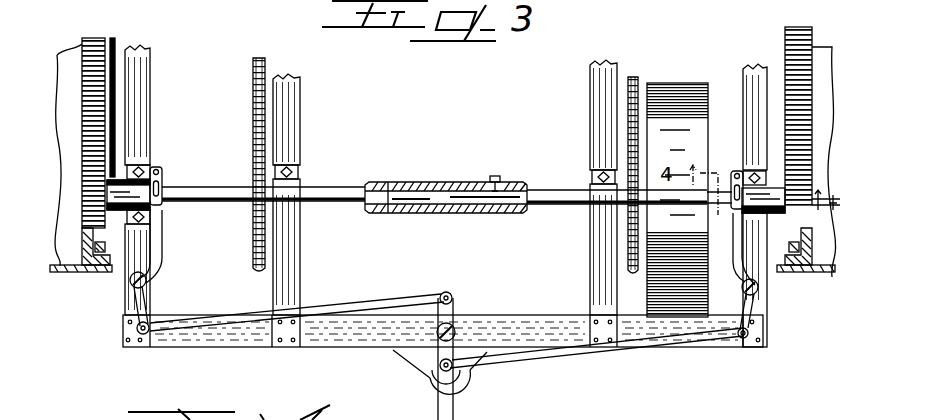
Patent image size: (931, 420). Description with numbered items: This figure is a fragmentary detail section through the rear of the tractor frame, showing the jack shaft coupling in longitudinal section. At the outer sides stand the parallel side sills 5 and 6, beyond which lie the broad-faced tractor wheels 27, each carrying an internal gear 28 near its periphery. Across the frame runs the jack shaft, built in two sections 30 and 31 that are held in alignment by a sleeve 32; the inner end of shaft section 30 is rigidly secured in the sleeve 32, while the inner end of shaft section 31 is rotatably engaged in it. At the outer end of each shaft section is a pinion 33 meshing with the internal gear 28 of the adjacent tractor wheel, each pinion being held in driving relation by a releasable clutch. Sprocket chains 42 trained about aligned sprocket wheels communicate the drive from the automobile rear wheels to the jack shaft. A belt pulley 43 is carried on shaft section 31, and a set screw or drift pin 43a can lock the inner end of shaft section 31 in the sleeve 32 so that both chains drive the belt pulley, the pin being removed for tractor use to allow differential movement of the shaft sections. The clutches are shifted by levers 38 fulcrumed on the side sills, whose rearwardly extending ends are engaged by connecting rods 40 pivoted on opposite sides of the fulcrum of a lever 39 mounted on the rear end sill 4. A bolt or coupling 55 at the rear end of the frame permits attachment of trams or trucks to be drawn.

The rear end sill 4 is at (363, 337).
The side sill 5 is at (137, 73).
The side sill 6 is at (757, 98).
The tractor wheel 27 is at (75, 272).
The internal gear 28 is at (97, 125).
The jack shaft section 30 is at (345, 190).
The jack shaft section 31 is at (548, 200).
The sleeve 32 is at (415, 188).
The pinion 33 is at (107, 213).
The lever 38 is at (155, 258).
The lever 39 is at (453, 308).
The connecting rod 40 is at (384, 300).
The sprocket chain 42 is at (256, 128).
The belt pulley 43 is at (673, 100).
The set screw 43a is at (498, 170).
The coupling 55 is at (430, 378).